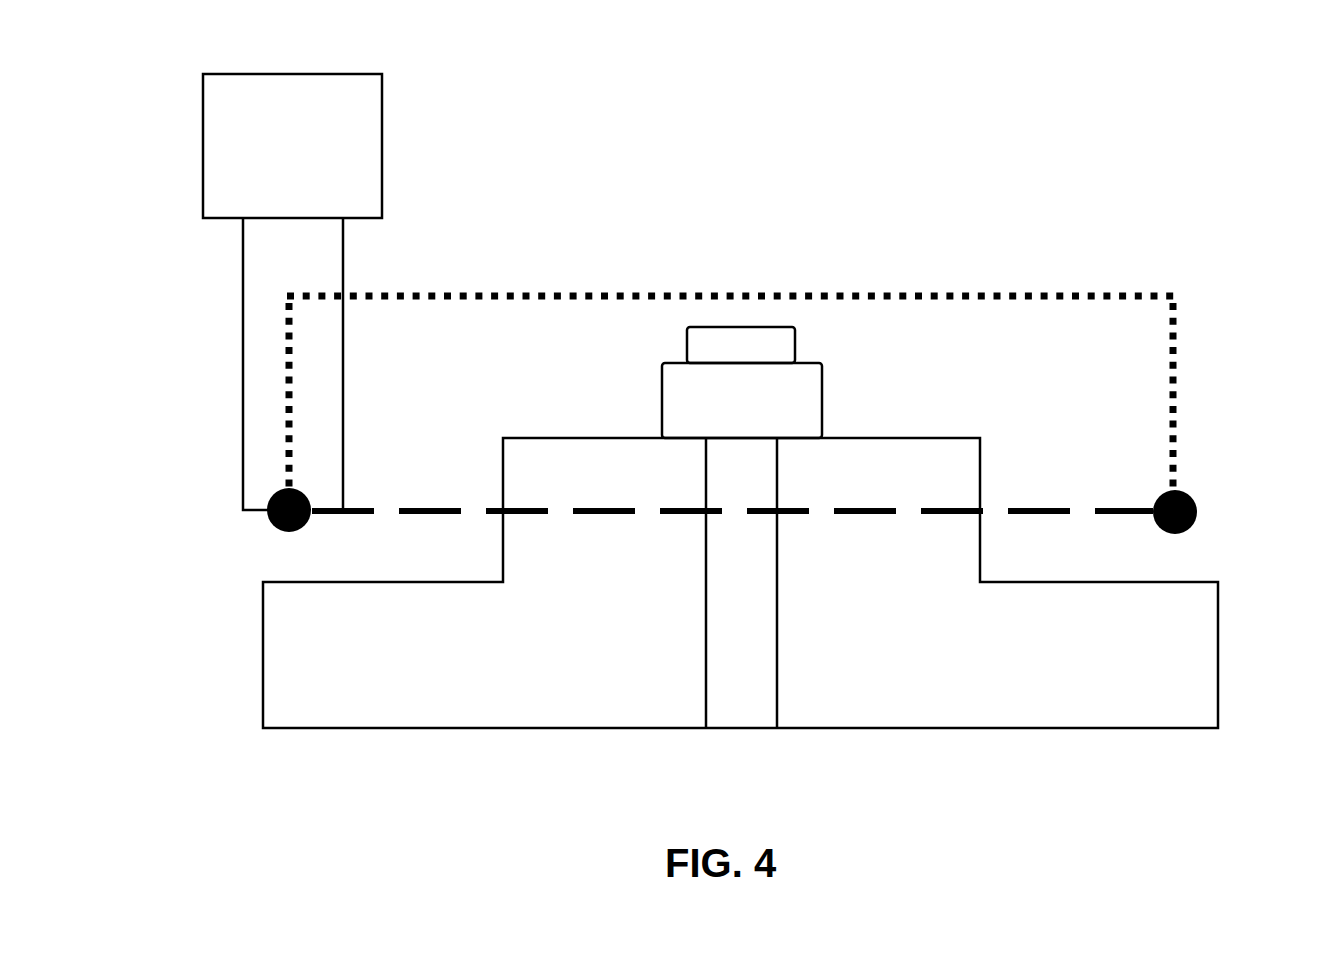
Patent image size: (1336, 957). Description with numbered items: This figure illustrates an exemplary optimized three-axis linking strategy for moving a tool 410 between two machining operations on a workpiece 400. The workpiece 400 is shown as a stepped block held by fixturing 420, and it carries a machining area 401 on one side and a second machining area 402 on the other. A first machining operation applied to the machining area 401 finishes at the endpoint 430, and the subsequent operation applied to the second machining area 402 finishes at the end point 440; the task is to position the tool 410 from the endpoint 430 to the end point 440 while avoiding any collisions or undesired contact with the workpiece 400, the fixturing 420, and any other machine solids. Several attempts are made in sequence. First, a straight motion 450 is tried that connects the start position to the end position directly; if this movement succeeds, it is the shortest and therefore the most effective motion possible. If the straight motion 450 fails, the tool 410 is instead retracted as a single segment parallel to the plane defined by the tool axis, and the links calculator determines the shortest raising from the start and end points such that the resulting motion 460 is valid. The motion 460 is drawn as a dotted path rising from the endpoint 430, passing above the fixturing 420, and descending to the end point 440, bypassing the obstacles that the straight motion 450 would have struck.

The workpiece 400 is at (262, 685).
The machining area 401 is at (358, 582).
The second machining area 402 is at (1113, 582).
The tool 410 is at (382, 178).
The fixturing 420 is at (662, 418).
The endpoint 430 is at (272, 530).
The end point 440 is at (1197, 512).
The straight motion 450 is at (630, 513).
The motion 460 is at (870, 297).